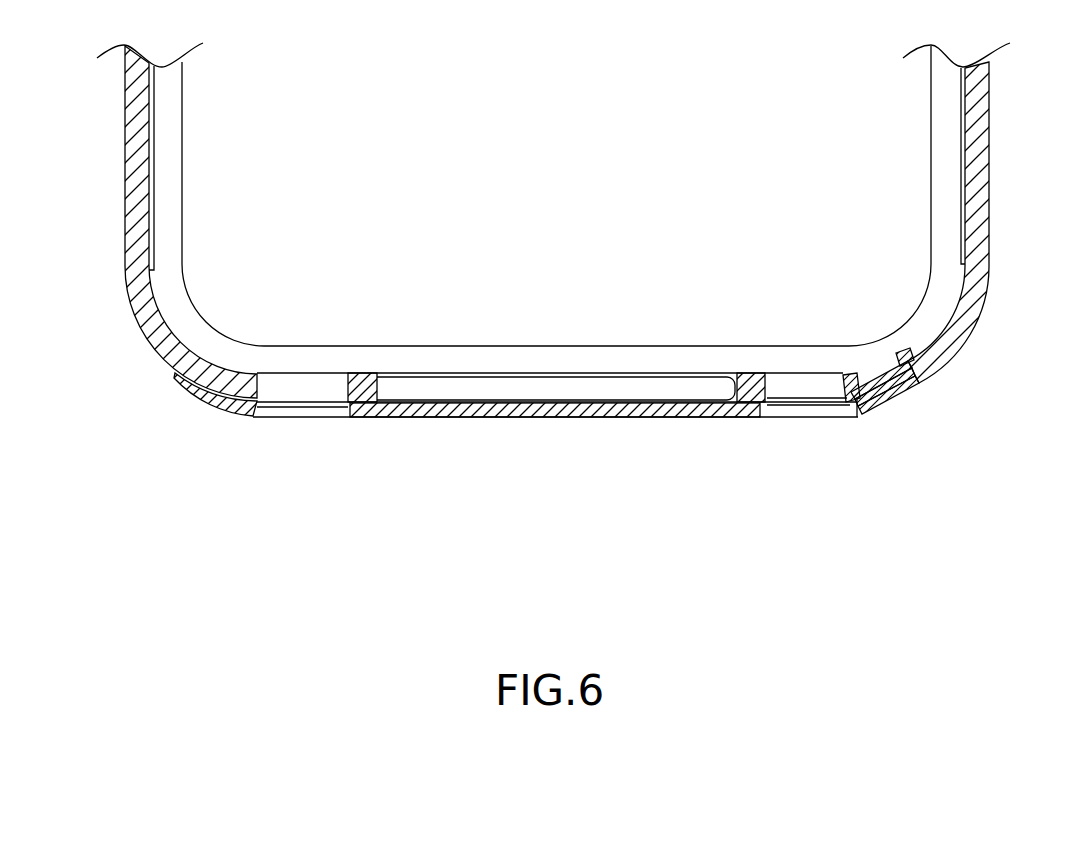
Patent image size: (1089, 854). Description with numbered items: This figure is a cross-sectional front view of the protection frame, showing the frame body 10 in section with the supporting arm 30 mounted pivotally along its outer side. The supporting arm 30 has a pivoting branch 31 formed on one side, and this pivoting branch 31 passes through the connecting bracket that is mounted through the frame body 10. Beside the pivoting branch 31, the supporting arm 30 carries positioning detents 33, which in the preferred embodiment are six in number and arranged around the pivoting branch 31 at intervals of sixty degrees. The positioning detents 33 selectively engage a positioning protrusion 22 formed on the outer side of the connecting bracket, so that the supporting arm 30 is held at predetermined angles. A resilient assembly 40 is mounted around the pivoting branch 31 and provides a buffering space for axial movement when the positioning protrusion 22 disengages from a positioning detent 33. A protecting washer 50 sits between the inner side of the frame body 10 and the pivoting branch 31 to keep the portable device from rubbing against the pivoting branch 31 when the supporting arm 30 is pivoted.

The frame body 10 is at (982, 196).
The positioning protrusion 22 is at (922, 386).
The supporting arm 30 is at (556, 412).
The pivoting branch 31 is at (880, 370).
The positioning detent 33 is at (905, 400).
The resilient assembly 40 is at (858, 382).
The protecting washer 50 is at (906, 350).